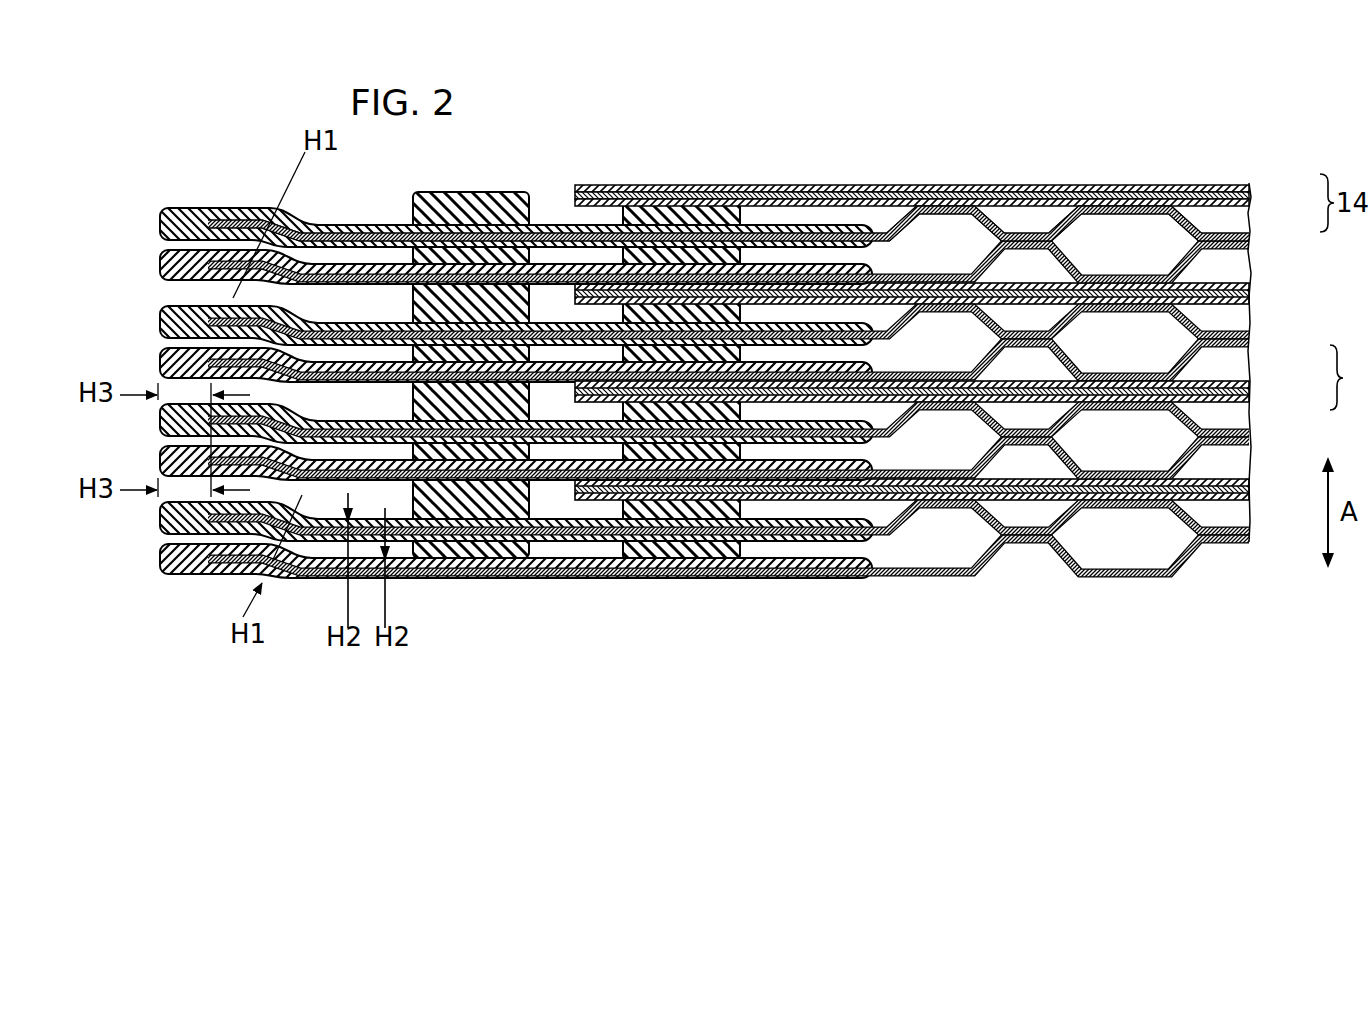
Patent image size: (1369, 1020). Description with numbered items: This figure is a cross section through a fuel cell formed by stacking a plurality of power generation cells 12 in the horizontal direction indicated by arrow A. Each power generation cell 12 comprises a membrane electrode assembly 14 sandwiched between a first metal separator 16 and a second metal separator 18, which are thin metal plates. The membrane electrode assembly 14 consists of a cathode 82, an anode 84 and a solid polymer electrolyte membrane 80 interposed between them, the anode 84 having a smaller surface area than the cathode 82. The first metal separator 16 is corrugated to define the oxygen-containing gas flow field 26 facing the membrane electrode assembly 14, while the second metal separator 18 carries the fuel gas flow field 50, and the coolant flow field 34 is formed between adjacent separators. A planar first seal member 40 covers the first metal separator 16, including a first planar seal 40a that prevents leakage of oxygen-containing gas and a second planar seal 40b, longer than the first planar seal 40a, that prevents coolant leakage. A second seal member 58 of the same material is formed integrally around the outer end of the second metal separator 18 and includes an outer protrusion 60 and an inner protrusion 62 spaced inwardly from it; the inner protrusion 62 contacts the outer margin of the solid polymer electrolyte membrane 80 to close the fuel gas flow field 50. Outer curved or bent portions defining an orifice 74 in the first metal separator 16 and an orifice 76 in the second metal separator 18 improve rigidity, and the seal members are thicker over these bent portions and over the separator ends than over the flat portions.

The power generation cell 12 is at (1349, 377).
The membrane electrode assembly 14 is at (1252, 386).
The first metal separator 16 is at (1207, 354).
The second metal separator 18 is at (1204, 430).
The oxygen-containing gas flow field 26 is at (1038, 270).
The coolant flow field 34 is at (1101, 242).
The first seal member 40 is at (145, 364).
The first planar seal 40a is at (534, 481).
The second planar seal 40b is at (578, 458).
The fuel gas flow field 50 is at (1005, 222).
The second seal member 58 is at (143, 322).
The outer protrusion 60 is at (458, 300).
The inner protrusion 62 is at (674, 317).
The orifice 74 is at (276, 282).
The orifice 76 is at (263, 221).
The solid polymer electrolyte membrane 80 is at (1250, 196).
The cathode 82 is at (1250, 189).
The anode 84 is at (1250, 203).